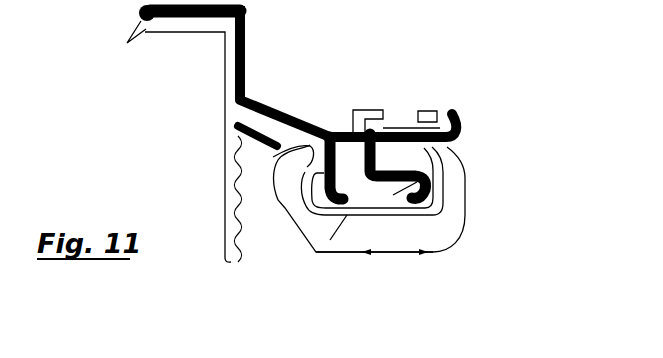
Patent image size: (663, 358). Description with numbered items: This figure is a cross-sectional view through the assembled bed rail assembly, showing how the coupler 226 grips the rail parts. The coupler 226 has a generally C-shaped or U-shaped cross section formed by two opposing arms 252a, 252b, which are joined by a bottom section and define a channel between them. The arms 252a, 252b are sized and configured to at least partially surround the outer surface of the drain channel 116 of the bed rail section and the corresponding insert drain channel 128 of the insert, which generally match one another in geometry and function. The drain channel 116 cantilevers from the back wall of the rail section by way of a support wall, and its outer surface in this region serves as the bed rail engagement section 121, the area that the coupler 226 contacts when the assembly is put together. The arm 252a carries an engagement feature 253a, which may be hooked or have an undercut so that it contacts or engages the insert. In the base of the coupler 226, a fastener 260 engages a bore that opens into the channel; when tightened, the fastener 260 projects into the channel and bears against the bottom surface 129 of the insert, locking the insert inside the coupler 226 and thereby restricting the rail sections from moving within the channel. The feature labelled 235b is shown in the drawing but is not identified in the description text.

The bed rail engagement section 121 is at (344, 102).
The engagement feature 253a is at (387, 152).
The panel flange 235b is at (307, 167).
The drain channel 116 is at (454, 156).
The insert drain channel 128 is at (393, 195).
The arm 252a is at (443, 218).
The arm 252b is at (296, 218).
The coupler 226 is at (397, 237).
The fastener 260 is at (397, 256).
The bottom surface 129 is at (330, 240).